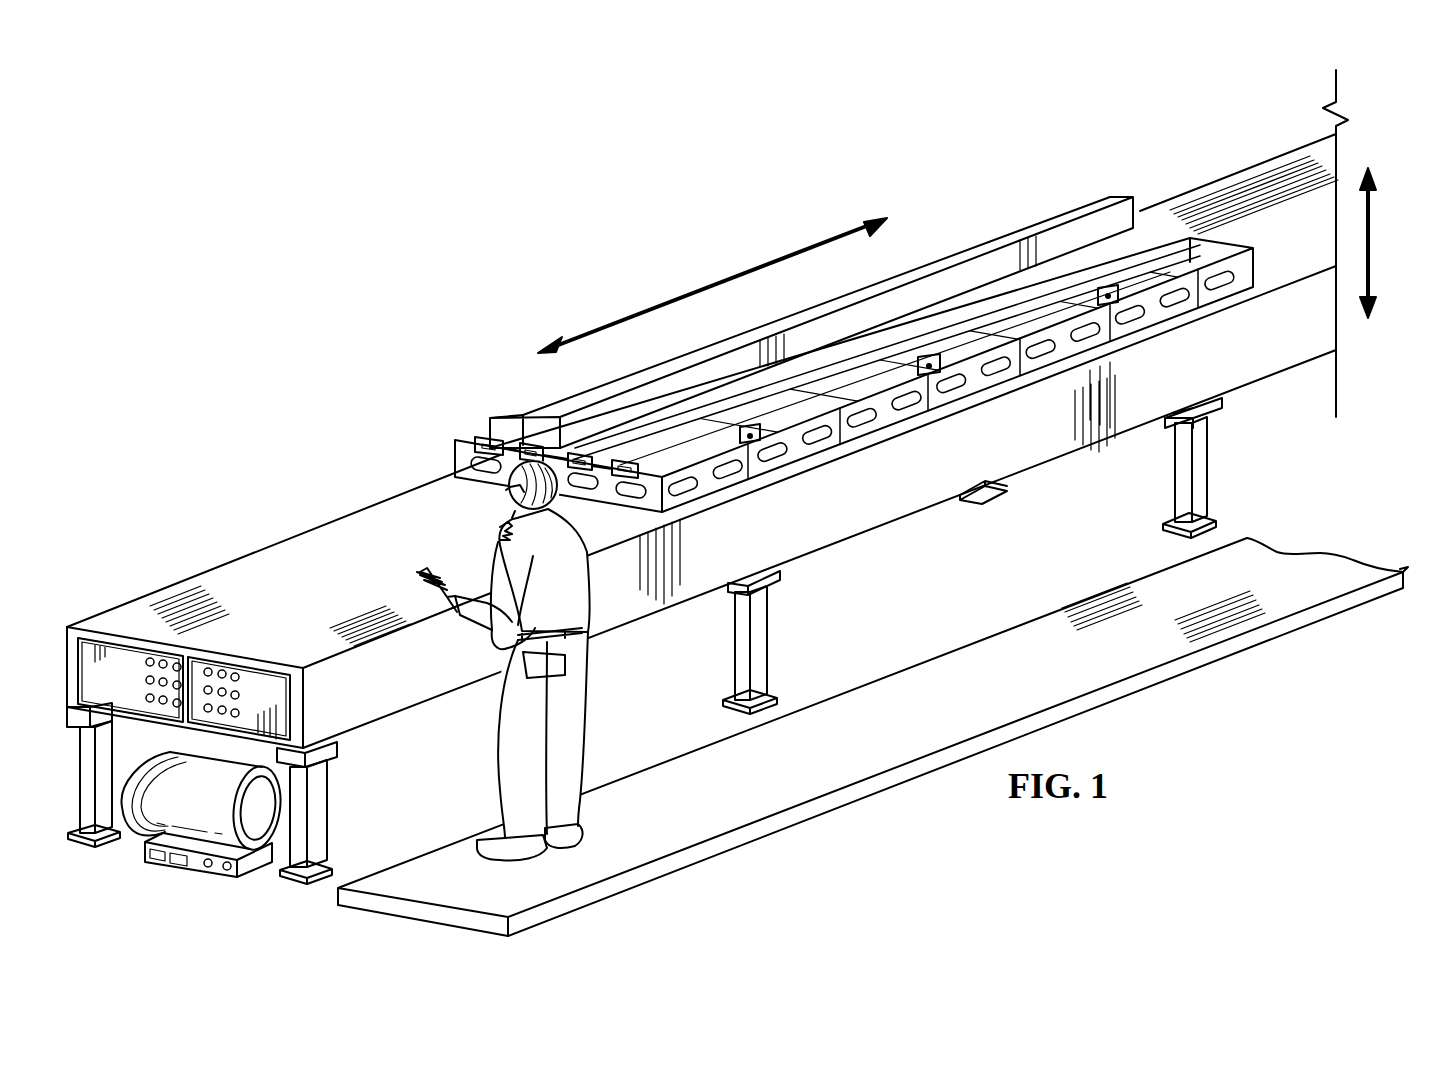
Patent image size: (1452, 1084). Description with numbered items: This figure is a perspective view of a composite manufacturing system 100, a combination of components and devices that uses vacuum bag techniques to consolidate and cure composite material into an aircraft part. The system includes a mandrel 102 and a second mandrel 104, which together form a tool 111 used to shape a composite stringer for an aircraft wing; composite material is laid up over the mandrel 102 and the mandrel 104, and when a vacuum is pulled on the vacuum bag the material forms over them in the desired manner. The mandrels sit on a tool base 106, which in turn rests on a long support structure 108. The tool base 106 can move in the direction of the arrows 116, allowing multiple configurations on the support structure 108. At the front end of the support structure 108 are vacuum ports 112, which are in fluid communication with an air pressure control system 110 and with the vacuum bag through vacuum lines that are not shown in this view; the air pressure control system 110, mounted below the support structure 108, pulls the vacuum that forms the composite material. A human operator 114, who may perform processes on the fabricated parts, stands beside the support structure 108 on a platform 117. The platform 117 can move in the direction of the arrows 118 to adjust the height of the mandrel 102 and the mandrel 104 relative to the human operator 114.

The composite manufacturing system 100 is at (444, 260).
The mandrel 102 is at (1128, 190).
The mandrel 104 is at (1008, 208).
The tool base 106 is at (467, 437).
The support structure 108 is at (172, 570).
The air pressure control system 110 is at (193, 870).
The tool 111 is at (1054, 131).
The vacuum ports 112 is at (130, 664).
The human operator 114 is at (573, 717).
The arrows 116 is at (713, 283).
The platform 117 is at (752, 845).
The arrows 118 is at (1372, 243).